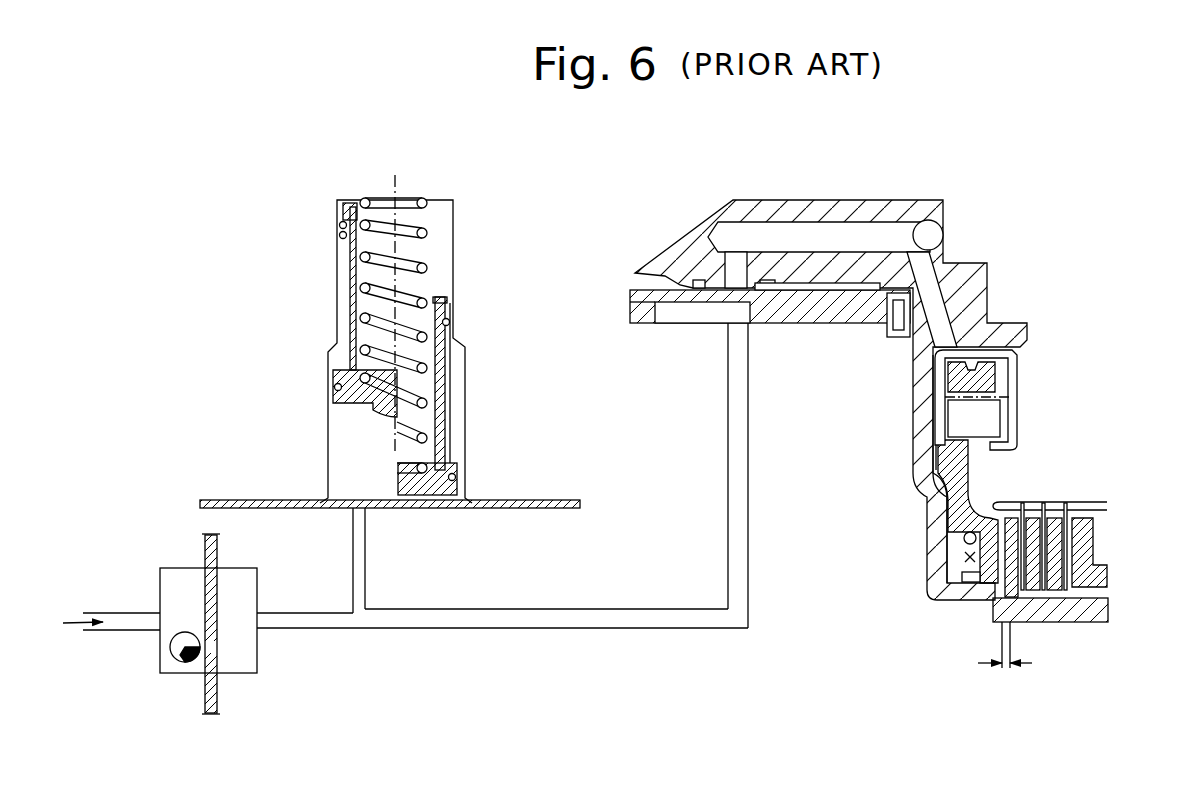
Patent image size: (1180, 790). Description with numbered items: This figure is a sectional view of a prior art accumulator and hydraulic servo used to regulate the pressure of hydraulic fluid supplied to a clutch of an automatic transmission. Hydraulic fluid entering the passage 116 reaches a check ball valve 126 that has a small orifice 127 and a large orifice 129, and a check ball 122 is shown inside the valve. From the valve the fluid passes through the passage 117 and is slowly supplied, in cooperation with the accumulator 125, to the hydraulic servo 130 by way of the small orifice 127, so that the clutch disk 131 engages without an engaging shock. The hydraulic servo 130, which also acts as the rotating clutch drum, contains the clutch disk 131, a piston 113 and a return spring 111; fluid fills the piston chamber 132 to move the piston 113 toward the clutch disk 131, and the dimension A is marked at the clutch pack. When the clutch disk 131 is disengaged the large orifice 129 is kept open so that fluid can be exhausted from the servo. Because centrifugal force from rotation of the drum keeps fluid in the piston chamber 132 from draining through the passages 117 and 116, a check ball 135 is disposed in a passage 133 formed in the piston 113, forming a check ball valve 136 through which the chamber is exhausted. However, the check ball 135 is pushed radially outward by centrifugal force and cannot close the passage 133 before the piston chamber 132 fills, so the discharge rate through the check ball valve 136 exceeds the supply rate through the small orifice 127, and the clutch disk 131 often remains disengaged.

The return spring 111 is at (1023, 384).
The piston 113 is at (963, 473).
The passage 116 is at (123, 625).
The passage 117 is at (547, 620).
The check ball 122 is at (182, 657).
The accumulator 125 is at (470, 405).
The check ball valve 126 is at (233, 688).
The small orifice 127 is at (218, 593).
The large orifice 129 is at (217, 647).
The hydraulic servo 130 is at (912, 498).
The clutch disk 131 is at (1093, 548).
The piston chamber 132 is at (928, 460).
The passage 133 is at (964, 537).
The check ball 135 is at (963, 560).
The check ball valve 136 is at (935, 597).
The clearance dimension A is at (1004, 668).